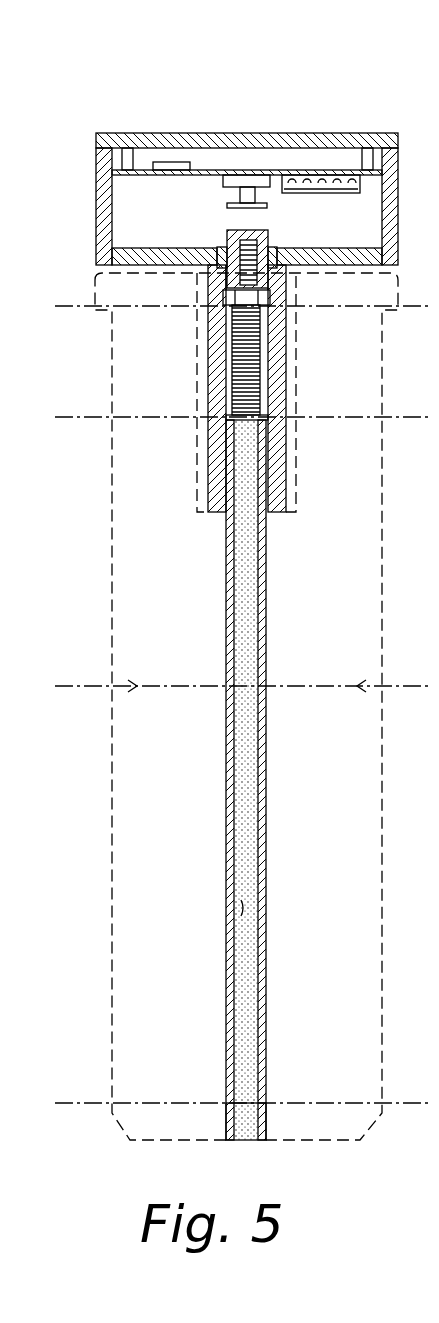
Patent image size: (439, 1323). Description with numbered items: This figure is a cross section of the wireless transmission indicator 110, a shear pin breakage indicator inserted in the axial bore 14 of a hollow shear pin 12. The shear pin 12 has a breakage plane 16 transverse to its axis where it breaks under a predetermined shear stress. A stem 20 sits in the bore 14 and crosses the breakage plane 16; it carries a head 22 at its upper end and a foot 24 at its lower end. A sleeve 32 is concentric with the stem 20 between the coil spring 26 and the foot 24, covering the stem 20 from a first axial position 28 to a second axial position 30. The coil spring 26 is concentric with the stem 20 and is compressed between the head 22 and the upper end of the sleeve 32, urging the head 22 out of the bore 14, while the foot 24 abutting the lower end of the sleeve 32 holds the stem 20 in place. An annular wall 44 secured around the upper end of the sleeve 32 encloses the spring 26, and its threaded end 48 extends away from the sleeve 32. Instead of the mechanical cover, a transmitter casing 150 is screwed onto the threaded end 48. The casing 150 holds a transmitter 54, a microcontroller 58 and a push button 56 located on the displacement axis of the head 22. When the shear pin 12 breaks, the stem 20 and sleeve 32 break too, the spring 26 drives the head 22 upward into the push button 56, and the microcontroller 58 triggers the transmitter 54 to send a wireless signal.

The transmitter casing 150 is at (134, 133).
The transmitter 54 is at (172, 162).
The push button 56 is at (260, 180).
The microcontroller 58 is at (350, 190).
The head 22 is at (270, 240).
The threaded end of annular wall 48 is at (216, 256).
The annular wall 44 is at (216, 472).
The coil spring 26 is at (258, 368).
The wireless transmission indicator 110 is at (182, 512).
The stem 20 is at (266, 588).
The sleeve 32 is at (258, 838).
The first axial position 28 is at (90, 418).
The breakage plane 16 is at (90, 688).
The second axial position 30 is at (73, 1100).
The shear pin 12 is at (168, 873).
The axial bore 14 is at (222, 888).
The foot 24 is at (266, 1122).